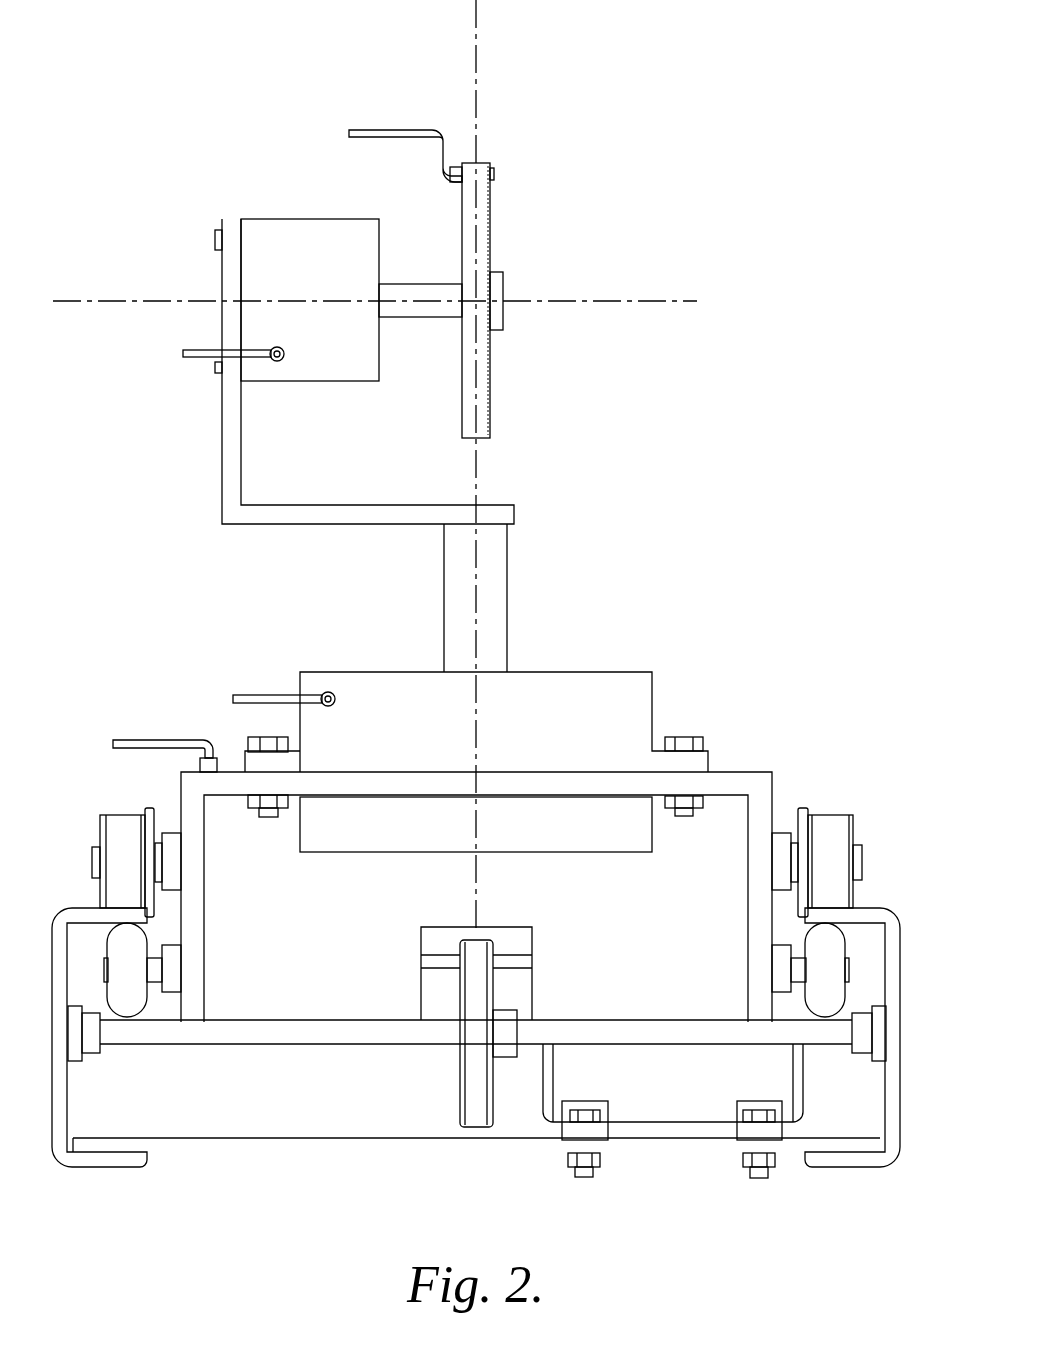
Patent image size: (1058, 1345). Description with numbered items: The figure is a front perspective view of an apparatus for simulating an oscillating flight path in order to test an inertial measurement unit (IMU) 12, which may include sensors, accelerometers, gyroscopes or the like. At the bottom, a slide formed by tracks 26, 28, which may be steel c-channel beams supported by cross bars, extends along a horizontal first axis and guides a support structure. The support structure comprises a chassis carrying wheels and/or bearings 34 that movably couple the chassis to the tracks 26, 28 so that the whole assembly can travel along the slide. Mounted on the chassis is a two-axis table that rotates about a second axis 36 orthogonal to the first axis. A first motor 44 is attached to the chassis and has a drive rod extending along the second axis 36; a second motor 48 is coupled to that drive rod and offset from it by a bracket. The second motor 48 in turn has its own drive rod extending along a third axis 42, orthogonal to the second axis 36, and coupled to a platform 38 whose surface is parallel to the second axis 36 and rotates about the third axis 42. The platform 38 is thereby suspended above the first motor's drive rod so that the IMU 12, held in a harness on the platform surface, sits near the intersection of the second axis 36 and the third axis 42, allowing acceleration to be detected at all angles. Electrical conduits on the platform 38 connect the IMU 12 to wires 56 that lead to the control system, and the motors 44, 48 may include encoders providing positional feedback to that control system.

The inertial measurement unit (IMU) 12 is at (498, 307).
The track 26 is at (890, 917).
The track 28 is at (63, 917).
The wheels and/or bearings 34 is at (100, 810).
The second axis 36 is at (478, 27).
The platform 38 is at (472, 168).
The third axis 42 is at (657, 300).
The first motor 44 is at (610, 680).
The second motor 48 is at (268, 236).
The wires 56 is at (382, 133).